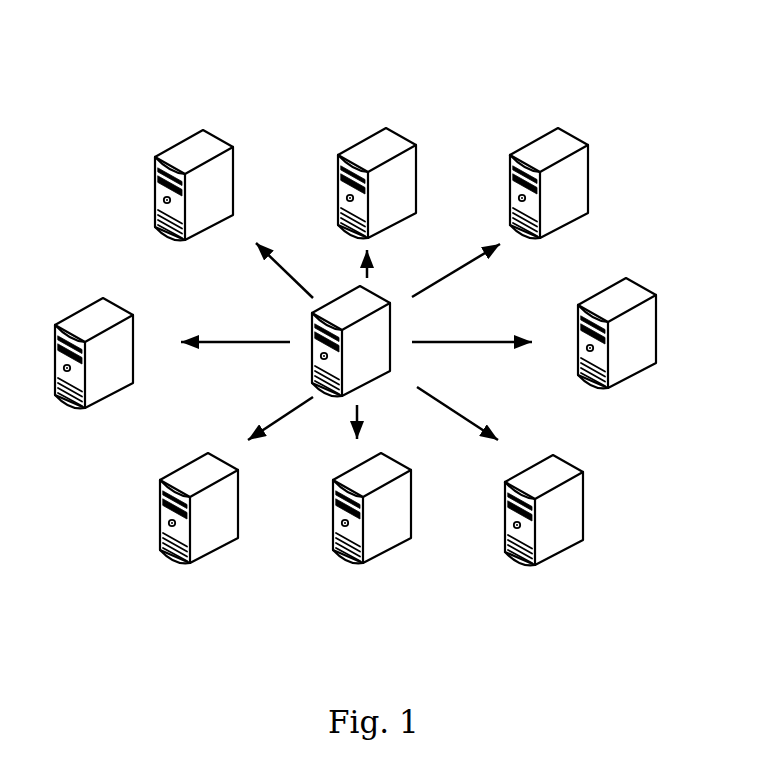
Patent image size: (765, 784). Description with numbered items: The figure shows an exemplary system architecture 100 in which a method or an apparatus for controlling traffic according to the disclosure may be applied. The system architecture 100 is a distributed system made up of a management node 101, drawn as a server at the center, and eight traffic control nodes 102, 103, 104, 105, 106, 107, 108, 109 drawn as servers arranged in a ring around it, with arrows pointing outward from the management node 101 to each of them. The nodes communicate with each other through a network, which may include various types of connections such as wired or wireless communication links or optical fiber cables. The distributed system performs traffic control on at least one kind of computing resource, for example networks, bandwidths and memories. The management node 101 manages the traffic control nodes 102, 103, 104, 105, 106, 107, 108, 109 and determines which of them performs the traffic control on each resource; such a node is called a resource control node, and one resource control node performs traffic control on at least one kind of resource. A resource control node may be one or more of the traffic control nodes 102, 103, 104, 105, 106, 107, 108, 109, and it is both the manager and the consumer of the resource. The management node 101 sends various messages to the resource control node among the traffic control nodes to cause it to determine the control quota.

The system architecture 100 is at (358, 52).
The management node 101 is at (359, 349).
The traffic control node 102 is at (195, 197).
The traffic control node 103 is at (385, 192).
The traffic control node 104 is at (559, 190).
The traffic control node 105 is at (622, 345).
The traffic control node 106 is at (553, 518).
The traffic control node 107 is at (378, 517).
The traffic control node 108 is at (206, 517).
The traffic control node 109 is at (99, 361).